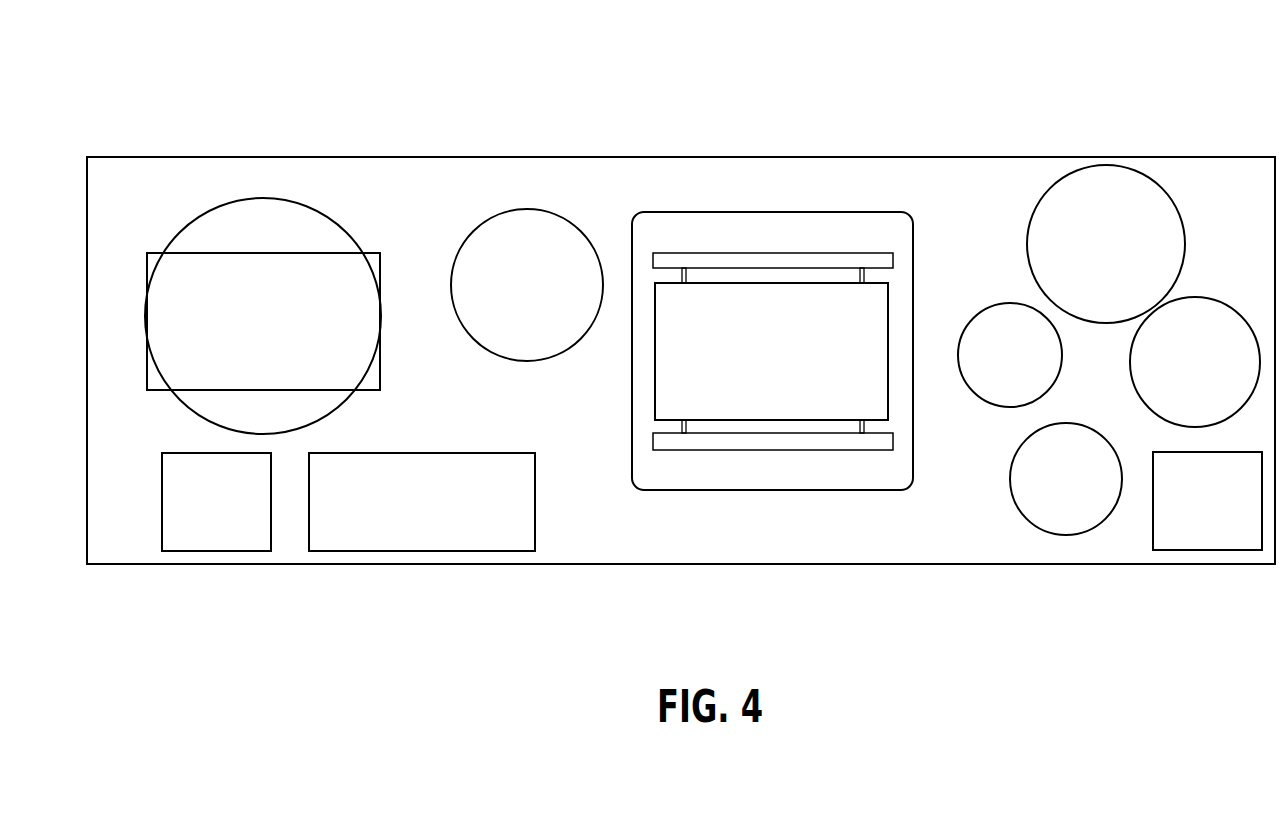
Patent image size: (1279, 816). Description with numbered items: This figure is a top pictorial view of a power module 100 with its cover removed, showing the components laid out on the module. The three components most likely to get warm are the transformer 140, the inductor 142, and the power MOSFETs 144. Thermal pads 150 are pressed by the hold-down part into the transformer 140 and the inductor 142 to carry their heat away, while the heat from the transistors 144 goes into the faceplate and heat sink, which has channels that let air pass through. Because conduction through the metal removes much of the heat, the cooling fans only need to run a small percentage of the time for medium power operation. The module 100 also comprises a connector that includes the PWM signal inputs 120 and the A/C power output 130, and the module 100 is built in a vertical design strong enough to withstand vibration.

The power module 100 is at (138, 52).
The PWM signal inputs 120 is at (216, 594).
The A/C power output 130 is at (178, 532).
The transformer 140 is at (843, 246).
The inductor 142 is at (543, 294).
The power MOSFETs 144 is at (1225, 503).
The thermal pads 150 is at (281, 333).